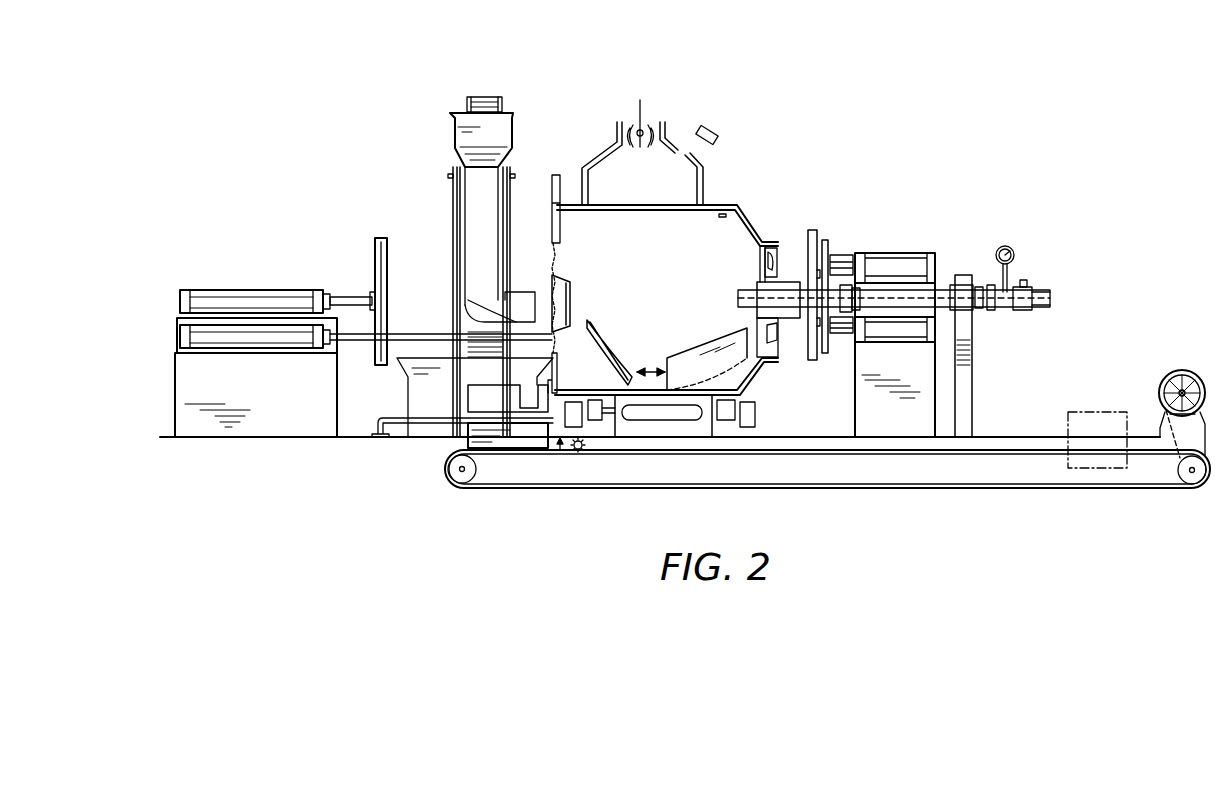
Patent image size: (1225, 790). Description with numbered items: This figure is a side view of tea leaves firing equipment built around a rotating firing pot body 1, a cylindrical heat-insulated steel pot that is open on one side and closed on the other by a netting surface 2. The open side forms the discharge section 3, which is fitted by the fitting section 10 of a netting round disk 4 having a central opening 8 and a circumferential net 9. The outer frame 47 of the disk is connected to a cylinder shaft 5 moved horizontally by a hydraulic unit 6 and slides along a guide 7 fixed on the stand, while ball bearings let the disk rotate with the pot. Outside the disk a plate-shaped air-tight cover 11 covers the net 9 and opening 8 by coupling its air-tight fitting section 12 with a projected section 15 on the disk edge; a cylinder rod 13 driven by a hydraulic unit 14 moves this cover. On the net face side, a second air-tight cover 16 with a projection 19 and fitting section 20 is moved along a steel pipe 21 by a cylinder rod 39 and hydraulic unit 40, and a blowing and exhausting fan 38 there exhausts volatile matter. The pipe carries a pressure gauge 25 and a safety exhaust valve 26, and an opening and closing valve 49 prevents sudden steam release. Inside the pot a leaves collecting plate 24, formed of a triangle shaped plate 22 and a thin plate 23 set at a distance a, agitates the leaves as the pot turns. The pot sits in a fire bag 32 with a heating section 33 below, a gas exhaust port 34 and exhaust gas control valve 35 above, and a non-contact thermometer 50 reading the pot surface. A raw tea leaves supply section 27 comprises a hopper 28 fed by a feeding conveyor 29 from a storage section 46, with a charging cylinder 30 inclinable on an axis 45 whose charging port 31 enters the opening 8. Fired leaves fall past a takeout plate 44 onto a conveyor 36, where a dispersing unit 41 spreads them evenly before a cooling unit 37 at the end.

The firing pot body 1 is at (752, 222).
The netting surface 2 is at (758, 256).
The discharge section 3 is at (562, 230).
The netting round disk 4 is at (558, 370).
The cylinder shaft 5 is at (358, 343).
The hydraulic unit 6 is at (270, 340).
The guide 7 is at (418, 427).
The opening 8 is at (571, 292).
The net 9 is at (557, 268).
The fitting section 10 is at (552, 210).
The air-tight cover 11 is at (386, 272).
The air-tight fitting section 12 is at (383, 238).
The cylinder rod 13 is at (350, 296).
The hydraulic unit 14 is at (280, 300).
The projected section 15 is at (550, 246).
The air-tight cover 16 is at (826, 242).
The projection 19 is at (770, 242).
The fitting section 20 is at (814, 230).
The steel pipe 21 is at (780, 325).
The triangle shaped plate 22 is at (707, 352).
The thin plate 23 is at (612, 350).
The leaves collecting plate 24 is at (667, 335).
The pressure gauge 25 is at (1012, 252).
The safety exhaust valve 26 is at (1030, 290).
The raw tea leaves supply section 27 is at (446, 194).
The hopper 28 is at (510, 125).
The raw tea leaves feeding conveyor 29 is at (492, 97).
The tea leaves charging cylinder 30 is at (498, 194).
The tea leaves charging port 31 is at (490, 310).
The fire bag 32 is at (704, 174).
The heating section 33 is at (680, 420).
The gas exhaust port 34 is at (663, 122).
The exhaust gas control valve 35 is at (640, 122).
The conveyor 36 is at (735, 460).
The fired tea leaves cooling unit 37 is at (1096, 420).
The blowing and exhausting fan 38 is at (765, 262).
The cylinder rod 39 is at (843, 262).
The hydraulic unit 40 is at (910, 262).
The tea leaves dispersing unit 41 is at (578, 452).
The tea leaves takeout plate 44 is at (510, 448).
The axis 45 is at (512, 176).
The raw tea leaves storage section 46 is at (405, 372).
The outer frame 47 is at (558, 178).
The opening and closing valve 49 is at (1052, 298).
The non-contact thermometer 50 is at (716, 132).
The distance a is at (651, 360).